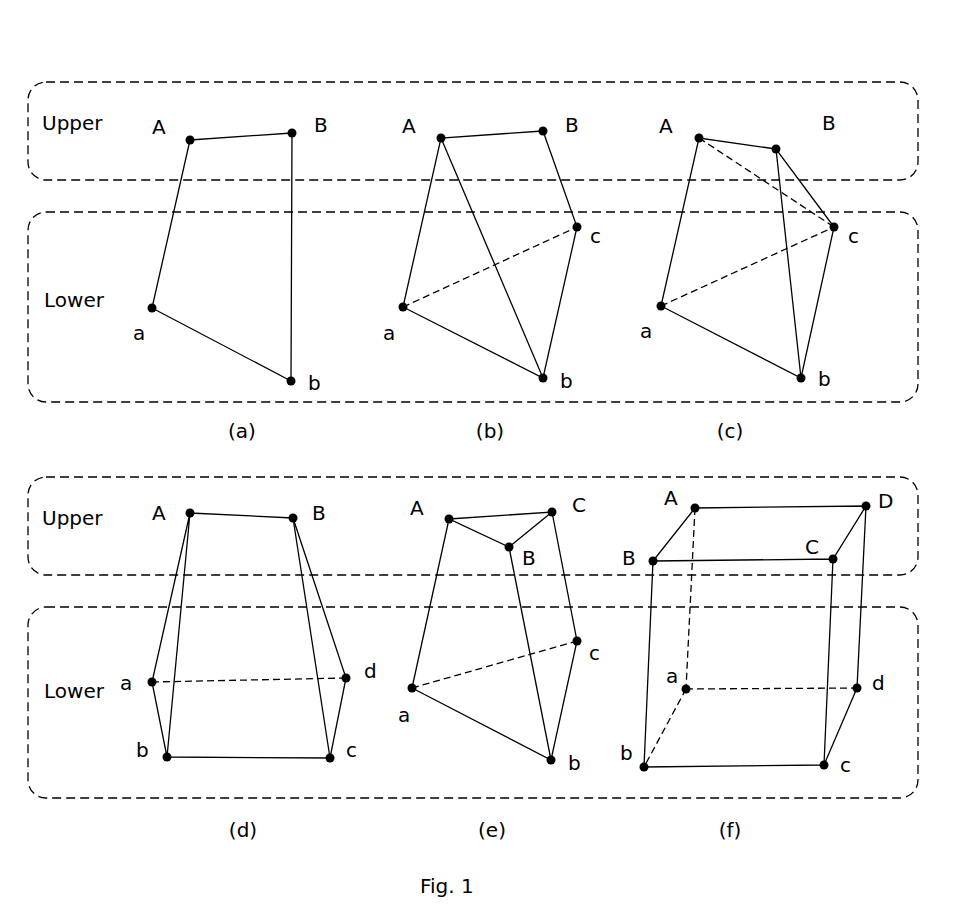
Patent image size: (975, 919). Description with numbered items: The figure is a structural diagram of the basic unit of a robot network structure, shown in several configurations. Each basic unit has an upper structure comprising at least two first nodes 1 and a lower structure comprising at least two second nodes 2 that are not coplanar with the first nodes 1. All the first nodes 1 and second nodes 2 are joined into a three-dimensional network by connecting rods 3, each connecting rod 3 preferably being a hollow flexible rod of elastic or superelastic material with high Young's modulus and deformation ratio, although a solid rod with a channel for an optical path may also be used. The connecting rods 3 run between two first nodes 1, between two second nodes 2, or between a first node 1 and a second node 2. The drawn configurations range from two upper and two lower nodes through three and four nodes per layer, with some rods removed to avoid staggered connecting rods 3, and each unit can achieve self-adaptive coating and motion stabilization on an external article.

The first node 1 is at (292, 133).
The second node 2 is at (152, 307).
The connecting rod 3 is at (238, 137).